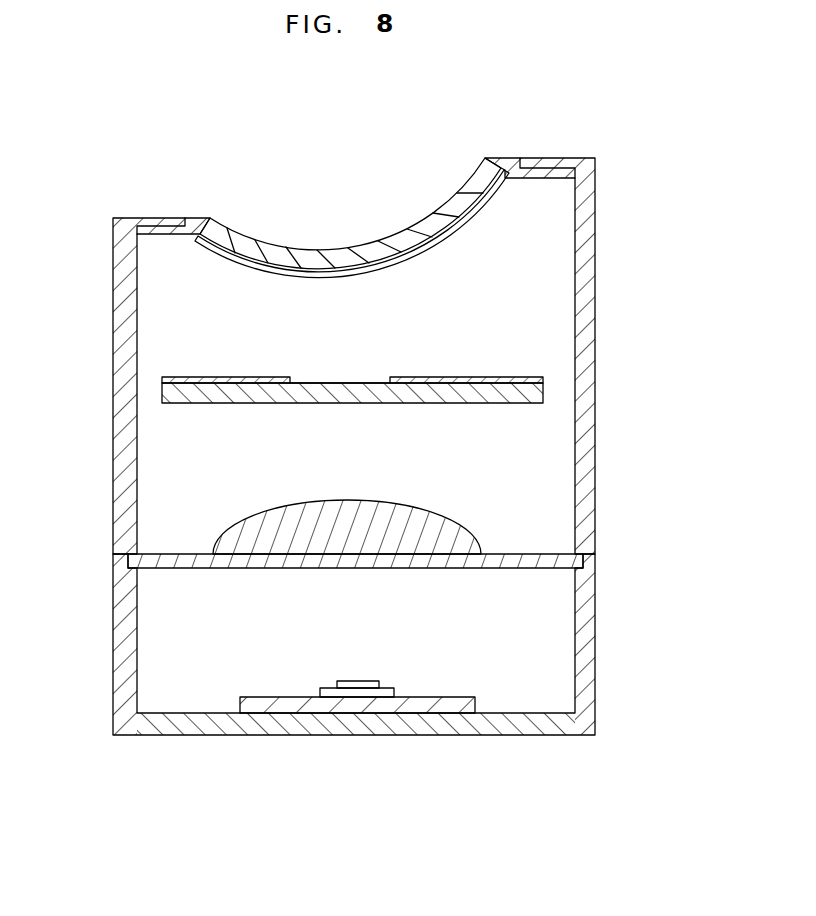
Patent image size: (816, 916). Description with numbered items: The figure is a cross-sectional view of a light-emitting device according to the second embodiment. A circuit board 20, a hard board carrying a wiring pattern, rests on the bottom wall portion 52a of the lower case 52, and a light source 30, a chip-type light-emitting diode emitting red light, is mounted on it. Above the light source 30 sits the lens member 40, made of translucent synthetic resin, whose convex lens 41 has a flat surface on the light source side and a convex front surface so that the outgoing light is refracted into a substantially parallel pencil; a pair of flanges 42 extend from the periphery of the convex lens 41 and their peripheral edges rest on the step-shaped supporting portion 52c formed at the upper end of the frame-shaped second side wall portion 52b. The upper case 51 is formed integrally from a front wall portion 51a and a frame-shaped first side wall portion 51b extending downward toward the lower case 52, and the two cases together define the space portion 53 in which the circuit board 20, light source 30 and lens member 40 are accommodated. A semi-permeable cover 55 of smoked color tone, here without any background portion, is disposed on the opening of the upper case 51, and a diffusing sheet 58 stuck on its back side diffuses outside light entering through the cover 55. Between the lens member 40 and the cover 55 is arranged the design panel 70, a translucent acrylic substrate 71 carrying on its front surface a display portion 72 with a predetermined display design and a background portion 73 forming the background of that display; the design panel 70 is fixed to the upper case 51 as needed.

The circuit board 20 is at (461, 706).
The light source 30 is at (350, 683).
The lens member 40 is at (355, 520).
The convex lens 41 is at (295, 515).
The flanges 42 is at (178, 563).
The upper case 51 is at (359, 326).
The front wall portion 51a is at (152, 227).
The first side wall portion 51b is at (124, 333).
The lower case 52 is at (367, 671).
The bottom wall portion 52a is at (288, 725).
The second side wall portion 52b is at (125, 666).
The supporting portion 52c is at (130, 566).
The space portion 53 is at (165, 435).
The cover 55 is at (398, 257).
The diffusing sheet 58 is at (250, 263).
The design panel 70 is at (352, 366).
The substrate 71 is at (240, 397).
The display portion 72 is at (353, 375).
The background portion 73 is at (202, 380).